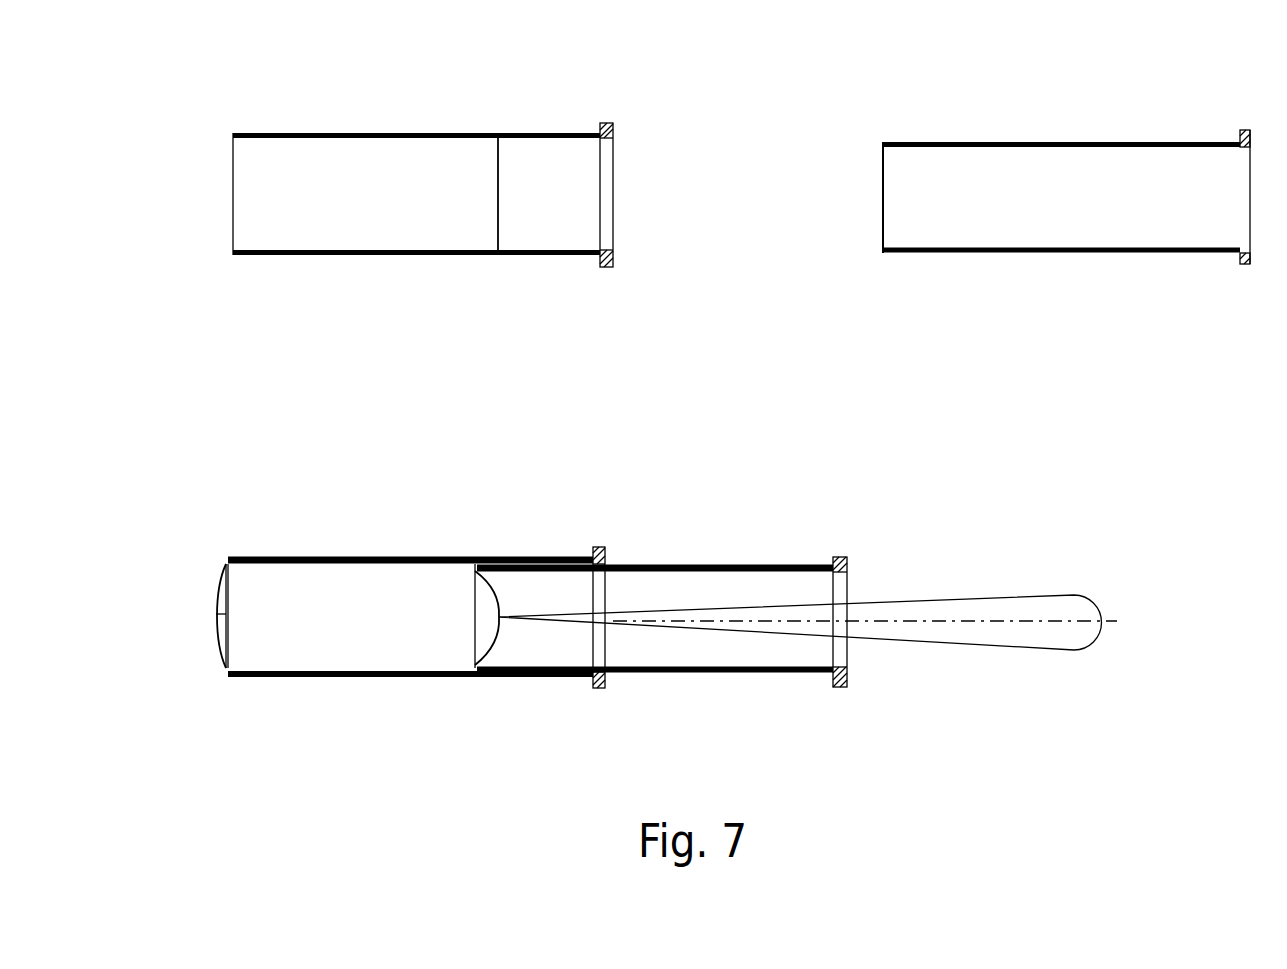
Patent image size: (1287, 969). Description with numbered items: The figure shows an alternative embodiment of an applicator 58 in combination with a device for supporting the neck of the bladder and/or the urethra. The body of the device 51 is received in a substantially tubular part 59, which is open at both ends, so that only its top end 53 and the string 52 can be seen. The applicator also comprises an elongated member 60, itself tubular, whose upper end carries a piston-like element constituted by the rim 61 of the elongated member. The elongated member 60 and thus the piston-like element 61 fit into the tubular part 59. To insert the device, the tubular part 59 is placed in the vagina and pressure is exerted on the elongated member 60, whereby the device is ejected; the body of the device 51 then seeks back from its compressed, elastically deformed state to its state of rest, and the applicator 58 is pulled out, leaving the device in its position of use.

The body of the device 51 is at (351, 616).
The string 52 is at (1013, 648).
The top end 53 is at (218, 593).
The applicator 58 is at (513, 522).
The tubular part 59 is at (433, 135).
The elongated member 60 is at (1090, 143).
The rim 61 is at (883, 143).